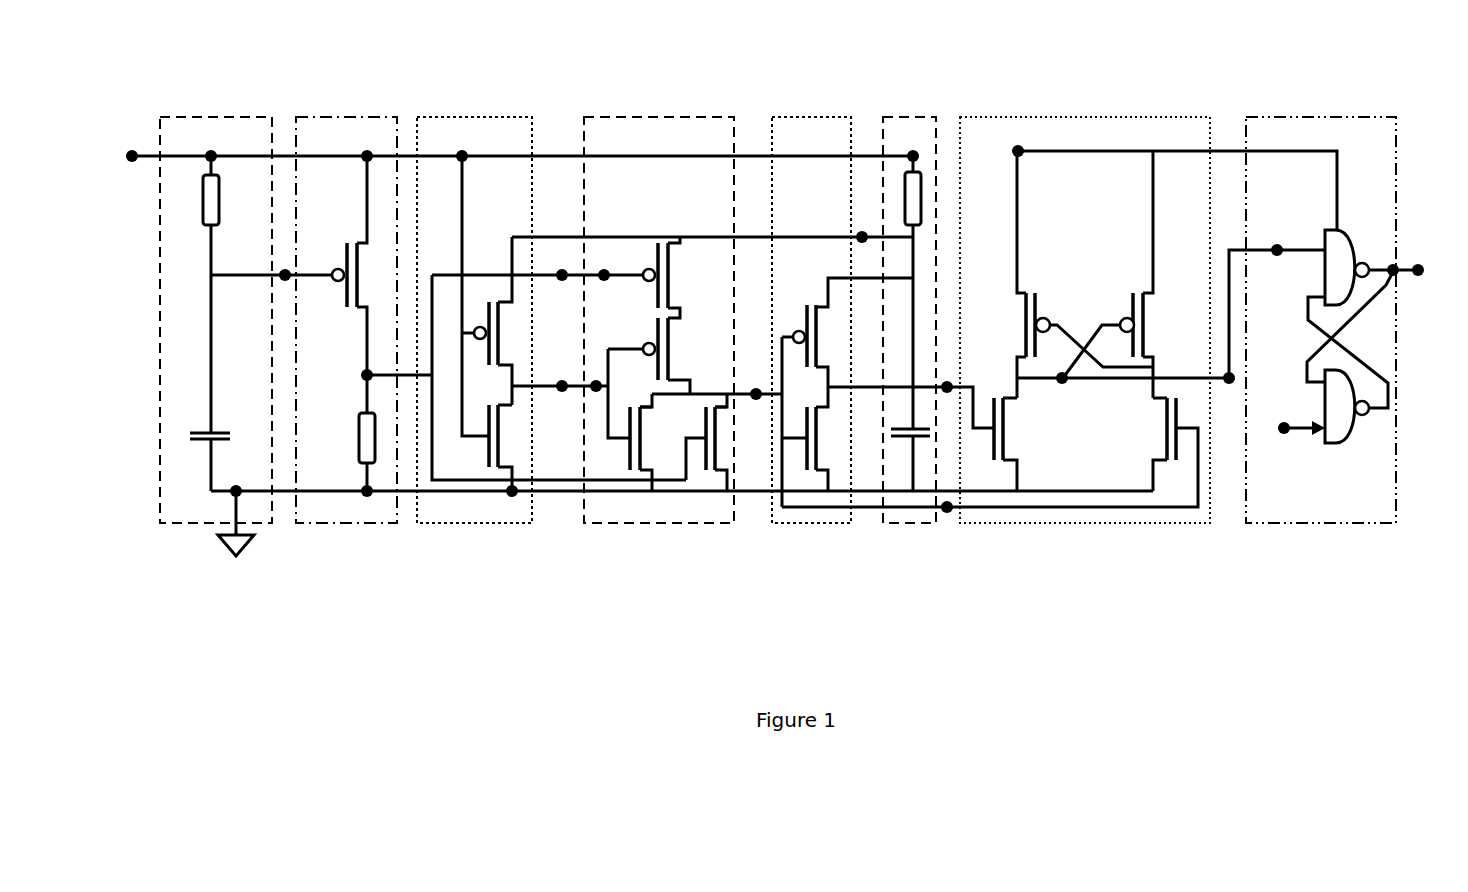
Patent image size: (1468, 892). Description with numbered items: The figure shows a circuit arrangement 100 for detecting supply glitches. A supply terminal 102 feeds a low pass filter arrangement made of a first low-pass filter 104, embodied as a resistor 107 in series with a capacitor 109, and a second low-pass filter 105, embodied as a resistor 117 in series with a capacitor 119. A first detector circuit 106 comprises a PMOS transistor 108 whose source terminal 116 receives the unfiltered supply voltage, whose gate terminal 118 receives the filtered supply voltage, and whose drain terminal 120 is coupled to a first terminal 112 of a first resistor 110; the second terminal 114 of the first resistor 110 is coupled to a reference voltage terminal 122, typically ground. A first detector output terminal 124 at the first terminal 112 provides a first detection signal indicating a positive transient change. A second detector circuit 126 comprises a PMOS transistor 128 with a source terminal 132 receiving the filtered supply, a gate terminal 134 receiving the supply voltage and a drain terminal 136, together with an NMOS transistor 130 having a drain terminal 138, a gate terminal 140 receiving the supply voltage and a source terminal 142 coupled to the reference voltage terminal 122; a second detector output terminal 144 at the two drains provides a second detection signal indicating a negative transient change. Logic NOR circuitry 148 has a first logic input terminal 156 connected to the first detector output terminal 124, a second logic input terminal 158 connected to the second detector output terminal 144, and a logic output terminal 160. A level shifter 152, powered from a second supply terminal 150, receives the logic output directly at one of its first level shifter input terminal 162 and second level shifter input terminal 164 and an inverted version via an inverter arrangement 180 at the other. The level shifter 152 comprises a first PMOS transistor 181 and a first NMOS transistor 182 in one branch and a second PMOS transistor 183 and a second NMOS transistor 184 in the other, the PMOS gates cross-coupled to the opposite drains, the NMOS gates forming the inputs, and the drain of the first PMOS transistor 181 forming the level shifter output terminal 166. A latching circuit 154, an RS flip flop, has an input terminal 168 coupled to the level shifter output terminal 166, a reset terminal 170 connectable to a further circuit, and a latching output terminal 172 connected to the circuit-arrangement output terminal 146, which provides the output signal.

The circuit arrangement 100 is at (186, 75).
The supply terminal 102 is at (130, 152).
The first low-pass filter 104 is at (175, 146).
The second low-pass filter 105 is at (889, 146).
The first detector circuit 106 is at (310, 517).
The resistor 107 is at (202, 202).
The PMOS transistor 108 is at (351, 233).
The capacitor 109 is at (190, 440).
The first resistor 110 is at (362, 440).
The first terminal 112 is at (367, 375).
The second terminal 114 is at (365, 489).
The source terminal 116 is at (366, 240).
The resistor 117 is at (921, 197).
The gate terminal 118 is at (333, 269).
The capacitor 119 is at (908, 436).
The drain terminal 120 is at (362, 308).
The reference voltage terminal 122 is at (223, 543).
The first detector output terminal 124 is at (562, 272).
The second detector circuit 126 is at (452, 146).
The PMOS transistor 128 is at (483, 297).
The NMOS transistor 130 is at (478, 446).
The source terminal 132 is at (508, 300).
The gate terminal 134 is at (477, 326).
The drain terminal 136 is at (511, 366).
The drain terminal 138 is at (513, 405).
The gate terminal 140 is at (488, 433).
The source terminal 142 is at (512, 466).
The second detector output terminal 144 is at (563, 384).
The circuit-arrangement output terminal 146 is at (1419, 266).
The logic NOR circuitry 148 is at (632, 146).
The second supply terminal 150 is at (1020, 149).
The level shifter 152 is at (1154, 146).
The latching circuit 154 is at (1347, 146).
The first logic input terminal 156 is at (605, 271).
The second logic input terminal 158 is at (597, 391).
The logic output terminal 160 is at (756, 400).
The first level shifter input terminal 162 is at (947, 510).
The second level shifter input terminal 164 is at (949, 384).
The level shifter output terminal 166 is at (1229, 384).
The input terminal 168 is at (1278, 247).
The reset terminal 170 is at (1287, 432).
The latching output terminal 172 is at (1391, 266).
The inverter arrangement 180 is at (792, 146).
The first PMOS transistor 181 is at (1036, 291).
The first NMOS transistor 182 is at (1008, 435).
The second PMOS transistor 183 is at (1132, 291).
The second NMOS transistor 184 is at (1165, 422).